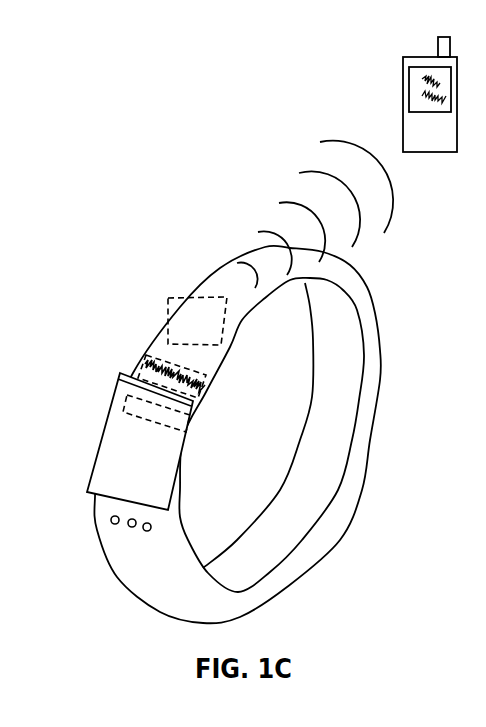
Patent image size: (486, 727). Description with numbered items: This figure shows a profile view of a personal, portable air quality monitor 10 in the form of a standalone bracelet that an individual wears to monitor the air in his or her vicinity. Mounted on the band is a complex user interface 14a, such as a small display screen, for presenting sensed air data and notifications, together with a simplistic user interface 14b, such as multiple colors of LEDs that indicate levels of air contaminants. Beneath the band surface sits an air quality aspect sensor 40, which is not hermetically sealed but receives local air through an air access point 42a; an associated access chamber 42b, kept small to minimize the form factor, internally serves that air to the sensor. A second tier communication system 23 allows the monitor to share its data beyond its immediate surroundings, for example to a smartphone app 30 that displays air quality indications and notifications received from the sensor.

The personal, portable air quality monitor 10 is at (224, 208).
The complex user interface 14a is at (110, 450).
The simplistic user interface 14b is at (110, 521).
The second tier communication system 23 is at (195, 318).
The smartphone app 30 is at (424, 89).
The air quality aspect sensor 40 is at (136, 398).
The air access point 42a is at (207, 394).
The access chamber 42b is at (197, 404).